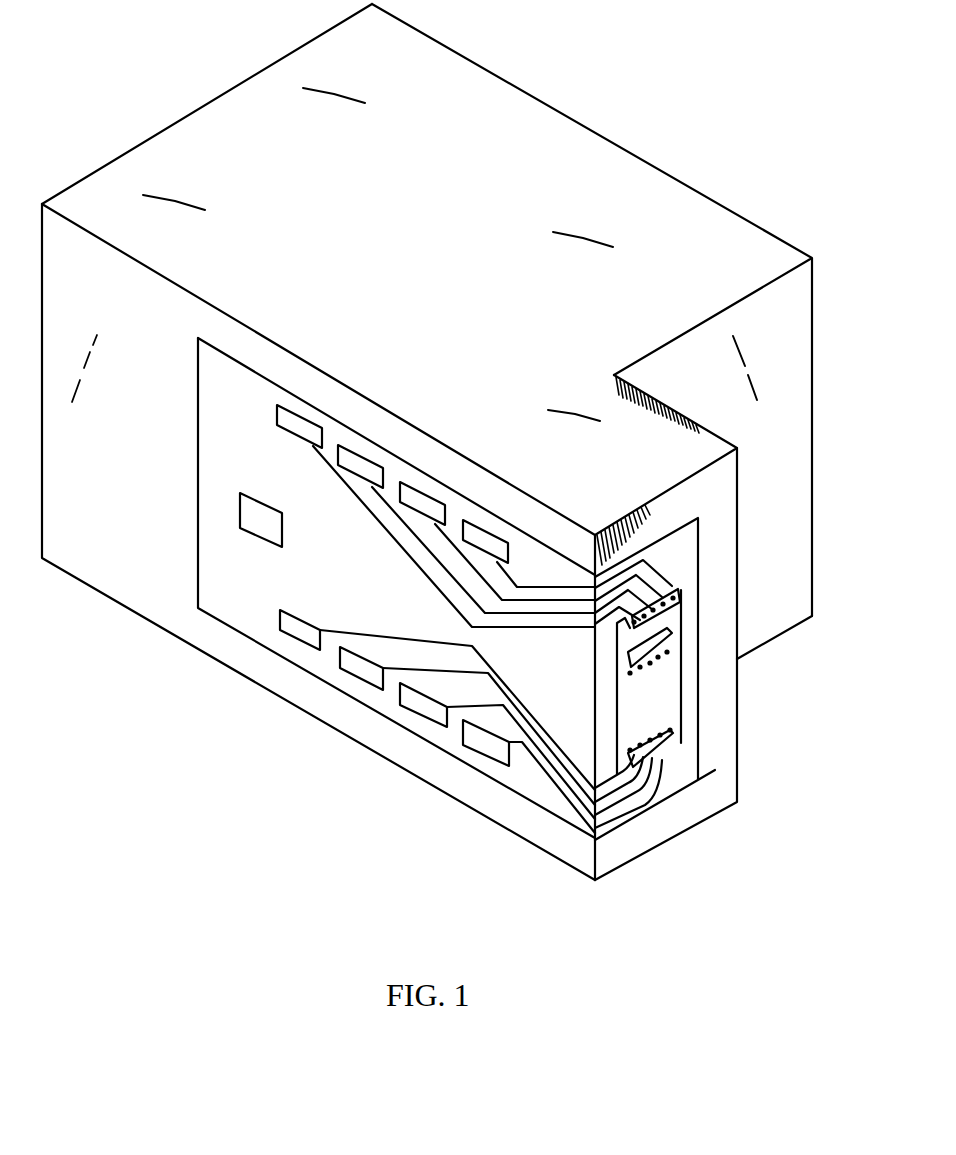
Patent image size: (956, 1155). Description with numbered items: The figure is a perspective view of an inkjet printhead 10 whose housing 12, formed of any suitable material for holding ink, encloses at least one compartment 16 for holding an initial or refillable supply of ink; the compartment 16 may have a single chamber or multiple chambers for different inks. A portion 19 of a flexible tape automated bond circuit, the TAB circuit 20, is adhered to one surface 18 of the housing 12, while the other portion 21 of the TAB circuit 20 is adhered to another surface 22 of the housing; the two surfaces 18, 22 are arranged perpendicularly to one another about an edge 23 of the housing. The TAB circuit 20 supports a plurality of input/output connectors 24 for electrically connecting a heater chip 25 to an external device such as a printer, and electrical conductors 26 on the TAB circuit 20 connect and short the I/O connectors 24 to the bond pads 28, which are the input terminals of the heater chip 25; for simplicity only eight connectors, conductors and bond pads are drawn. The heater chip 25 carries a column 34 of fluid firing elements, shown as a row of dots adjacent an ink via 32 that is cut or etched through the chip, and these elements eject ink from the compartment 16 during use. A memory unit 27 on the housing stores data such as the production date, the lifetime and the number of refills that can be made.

The inkjet printhead 10 is at (663, 131).
The housing 12 is at (183, 116).
The compartment 16 is at (430, 250).
The surface 18 is at (140, 434).
The portion 19 is at (208, 341).
The TAB circuit 20 is at (198, 498).
The other portion 21 is at (698, 522).
The another surface 22 is at (628, 840).
The edge 23 is at (595, 852).
The input/output connectors 24 is at (357, 457).
The heater chip 25 is at (681, 590).
The electrical conductors 26 is at (420, 543).
The memory unit 27 is at (241, 533).
The bond pads 28 is at (676, 603).
The ink via 32 is at (667, 628).
The column 34 is at (667, 652).